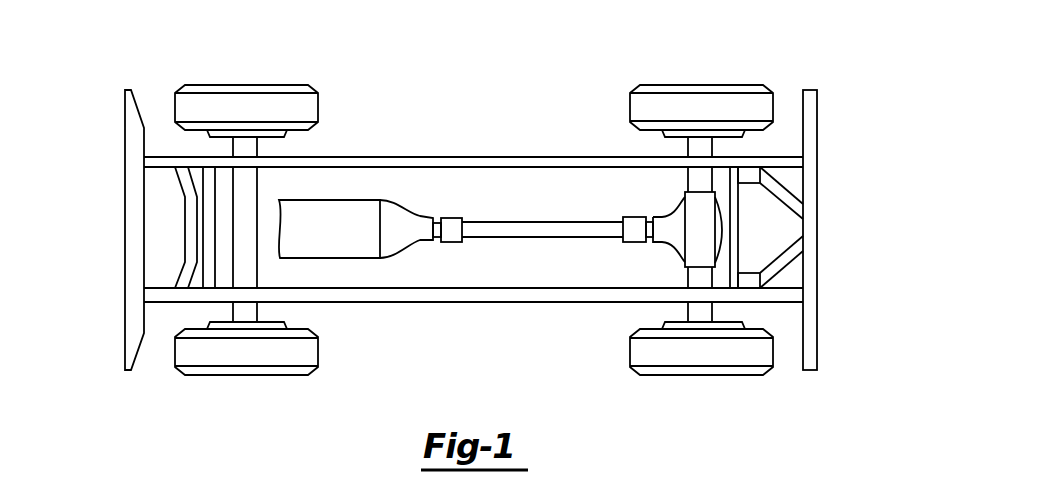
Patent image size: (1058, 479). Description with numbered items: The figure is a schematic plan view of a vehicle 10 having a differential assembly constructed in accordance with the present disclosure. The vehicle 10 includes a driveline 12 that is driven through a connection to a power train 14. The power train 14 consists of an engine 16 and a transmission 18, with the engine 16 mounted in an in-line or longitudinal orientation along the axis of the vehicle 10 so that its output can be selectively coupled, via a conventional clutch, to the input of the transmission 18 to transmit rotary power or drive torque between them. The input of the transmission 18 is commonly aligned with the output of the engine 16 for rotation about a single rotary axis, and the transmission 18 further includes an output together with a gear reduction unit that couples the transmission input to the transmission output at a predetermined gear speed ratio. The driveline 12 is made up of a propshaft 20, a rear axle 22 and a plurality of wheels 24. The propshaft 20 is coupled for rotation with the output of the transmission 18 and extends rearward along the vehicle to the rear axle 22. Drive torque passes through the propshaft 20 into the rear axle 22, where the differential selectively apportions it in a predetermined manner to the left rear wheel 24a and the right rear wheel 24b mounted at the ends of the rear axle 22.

The vehicle 10 is at (427, 100).
The driveline 12 is at (645, 212).
The power train 14 is at (356, 268).
The engine 16 is at (340, 242).
The transmission 18 is at (418, 225).
The propshaft 20 is at (541, 223).
The rear axle 22 is at (678, 257).
The wheels 24 is at (713, 202).
The left rear wheel 24a is at (640, 347).
The right rear wheel 24b is at (740, 90).